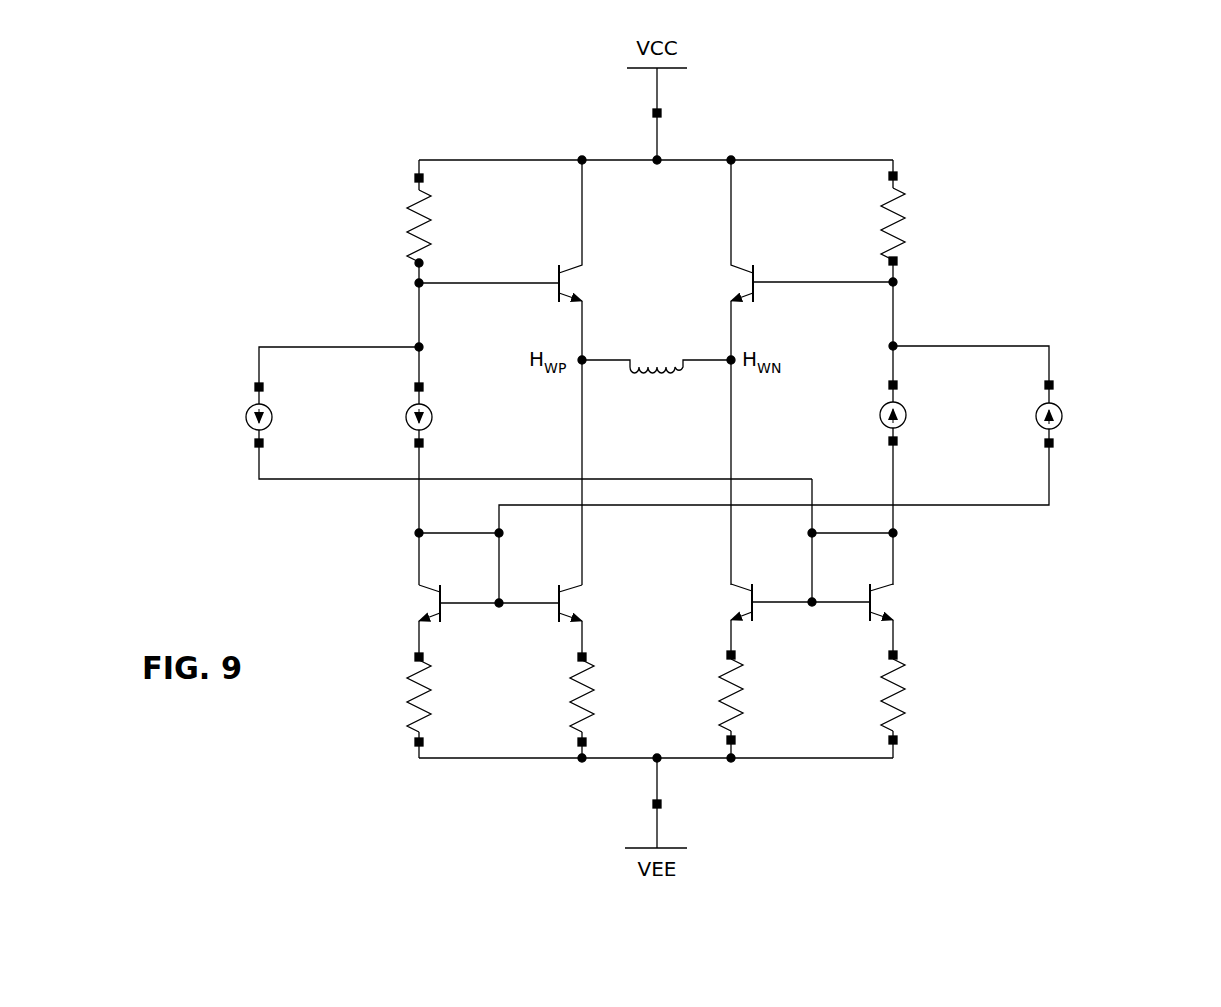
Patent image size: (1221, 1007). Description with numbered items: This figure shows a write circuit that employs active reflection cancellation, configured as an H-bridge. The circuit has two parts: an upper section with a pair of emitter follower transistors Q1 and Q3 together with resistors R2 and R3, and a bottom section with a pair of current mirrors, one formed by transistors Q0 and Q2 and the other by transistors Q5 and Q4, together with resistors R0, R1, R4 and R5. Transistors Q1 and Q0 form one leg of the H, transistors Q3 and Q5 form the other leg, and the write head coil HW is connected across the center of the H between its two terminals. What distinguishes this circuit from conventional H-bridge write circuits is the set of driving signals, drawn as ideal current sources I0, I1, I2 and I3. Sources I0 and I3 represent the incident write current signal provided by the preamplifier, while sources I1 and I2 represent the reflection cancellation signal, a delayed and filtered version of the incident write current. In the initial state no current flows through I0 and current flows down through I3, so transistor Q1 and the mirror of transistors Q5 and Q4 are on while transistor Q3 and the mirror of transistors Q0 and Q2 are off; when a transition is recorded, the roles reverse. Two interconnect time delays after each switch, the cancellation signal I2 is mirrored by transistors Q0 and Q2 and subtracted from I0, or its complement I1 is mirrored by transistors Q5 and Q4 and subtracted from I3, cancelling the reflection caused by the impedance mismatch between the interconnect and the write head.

The resistor R0 is at (562, 705).
The resistor R1 is at (399, 705).
The resistor R2 is at (912, 212).
The resistor R3 is at (401, 213).
The resistor R4 is at (911, 704).
The resistor R5 is at (713, 704).
The transistor Q0 is at (556, 622).
The emitter follower transistor Q1 is at (516, 260).
The transistor Q2 is at (441, 622).
The emitter follower transistor Q3 is at (795, 260).
The transistor Q4 is at (868, 621).
The transistor Q5 is at (753, 621).
The current source I0 is at (460, 415).
The current source I1 is at (460, 413).
The current source I2 is at (850, 474).
The current source I3 is at (849, 413).
The coil HW is at (656, 350).